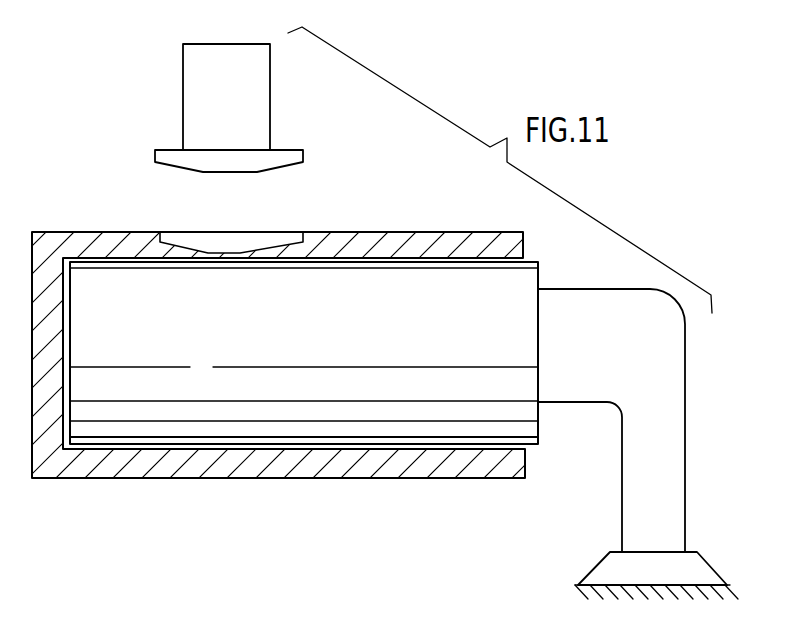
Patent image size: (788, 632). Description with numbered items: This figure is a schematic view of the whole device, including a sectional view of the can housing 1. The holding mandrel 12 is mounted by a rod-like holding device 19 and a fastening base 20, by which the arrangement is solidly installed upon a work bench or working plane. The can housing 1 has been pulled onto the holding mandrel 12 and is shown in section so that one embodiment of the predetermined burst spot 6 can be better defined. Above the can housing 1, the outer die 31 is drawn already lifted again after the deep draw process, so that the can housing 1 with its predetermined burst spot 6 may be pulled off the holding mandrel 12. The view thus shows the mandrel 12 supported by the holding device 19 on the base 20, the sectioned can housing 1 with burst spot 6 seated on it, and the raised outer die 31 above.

The can housing 1 is at (444, 240).
The predetermined burst spot 6 is at (253, 226).
The holding mandrel 12 is at (528, 283).
The rod-like holding device 19 is at (677, 427).
The fastening base 20 is at (690, 560).
The outer die 31 is at (276, 139).